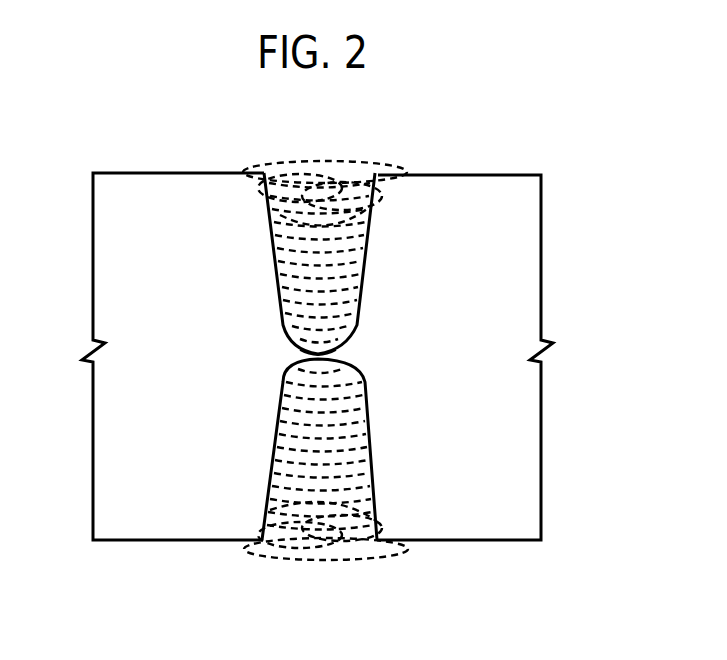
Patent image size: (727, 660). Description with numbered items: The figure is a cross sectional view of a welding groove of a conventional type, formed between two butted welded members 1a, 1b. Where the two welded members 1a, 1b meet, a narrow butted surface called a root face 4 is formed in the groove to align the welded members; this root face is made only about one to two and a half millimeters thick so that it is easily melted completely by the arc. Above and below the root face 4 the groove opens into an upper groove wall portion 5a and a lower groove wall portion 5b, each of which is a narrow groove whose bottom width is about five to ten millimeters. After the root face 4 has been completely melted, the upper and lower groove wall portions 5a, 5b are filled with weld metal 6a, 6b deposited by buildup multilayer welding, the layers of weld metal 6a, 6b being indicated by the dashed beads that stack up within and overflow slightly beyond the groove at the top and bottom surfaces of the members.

The welded member 1a is at (133, 307).
The welded member 1b is at (482, 295).
The root face 4 is at (316, 355).
The groove wall portion 5a is at (367, 270).
The groove wall portion 5b is at (370, 433).
The weld metal 6a is at (335, 168).
The weld metal 6b is at (282, 548).